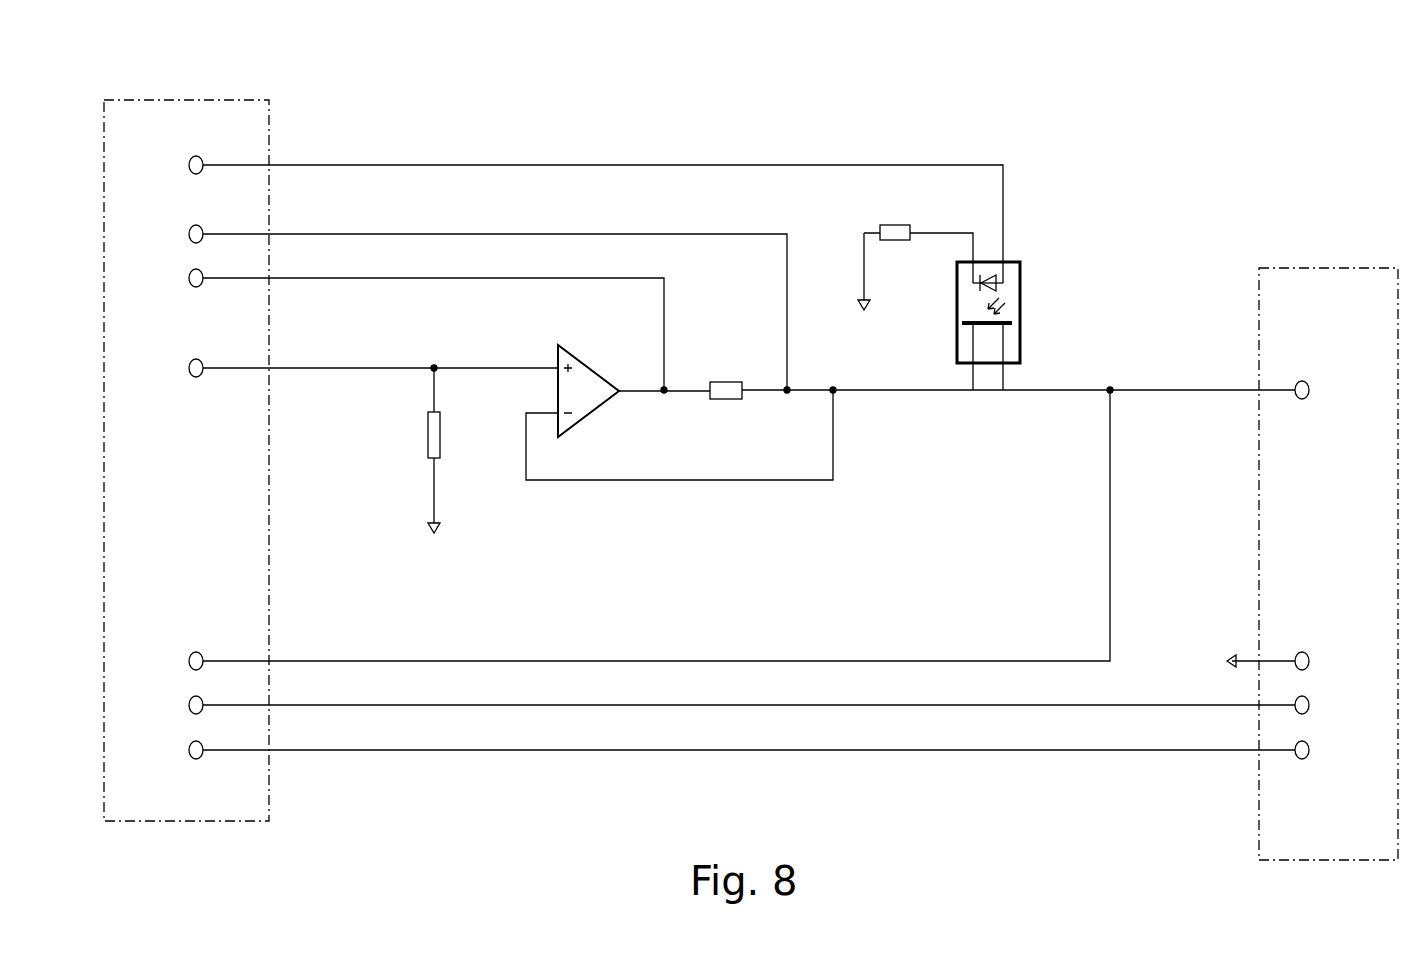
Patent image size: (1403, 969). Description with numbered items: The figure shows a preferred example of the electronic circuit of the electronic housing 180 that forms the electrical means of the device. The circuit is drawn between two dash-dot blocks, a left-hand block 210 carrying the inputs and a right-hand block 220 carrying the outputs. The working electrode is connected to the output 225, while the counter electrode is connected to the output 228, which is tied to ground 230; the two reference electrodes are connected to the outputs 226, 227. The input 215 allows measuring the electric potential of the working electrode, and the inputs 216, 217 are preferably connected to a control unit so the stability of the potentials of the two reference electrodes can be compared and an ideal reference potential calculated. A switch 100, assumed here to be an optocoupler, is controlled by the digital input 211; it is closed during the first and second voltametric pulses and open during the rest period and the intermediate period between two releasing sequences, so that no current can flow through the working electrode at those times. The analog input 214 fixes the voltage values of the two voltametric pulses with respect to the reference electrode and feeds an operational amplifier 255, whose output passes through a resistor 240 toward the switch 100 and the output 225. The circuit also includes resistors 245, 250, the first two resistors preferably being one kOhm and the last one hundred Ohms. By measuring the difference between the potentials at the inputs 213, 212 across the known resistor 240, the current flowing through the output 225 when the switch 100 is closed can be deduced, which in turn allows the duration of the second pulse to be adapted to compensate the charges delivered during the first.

The switch 100 is at (1020, 296).
The electronic housing 180 is at (1052, 121).
The first connector block 210 is at (246, 821).
The digital input 211 is at (571, 211).
The input 212 is at (464, 300).
The input 213 is at (403, 322).
The analog input 214 is at (348, 354).
The input 215 is at (626, 528).
The input 216 is at (716, 696).
The input 217 is at (717, 740).
The second connector block 220 is at (1323, 268).
The output 225 is at (1300, 369).
The output 226 is at (1331, 696).
The output 227 is at (1330, 765).
The output 228 is at (1277, 642).
The ground 230 is at (815, 488).
The resistor 240 is at (996, 370).
The resistor 245 is at (405, 445).
The resistor 250 is at (918, 246).
The operational amplifier 255 is at (597, 404).